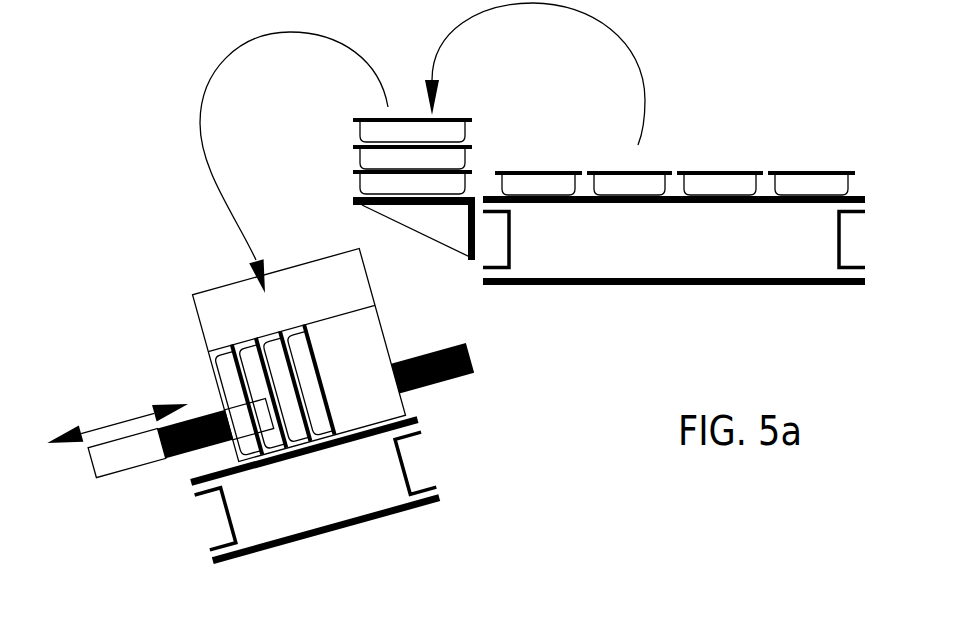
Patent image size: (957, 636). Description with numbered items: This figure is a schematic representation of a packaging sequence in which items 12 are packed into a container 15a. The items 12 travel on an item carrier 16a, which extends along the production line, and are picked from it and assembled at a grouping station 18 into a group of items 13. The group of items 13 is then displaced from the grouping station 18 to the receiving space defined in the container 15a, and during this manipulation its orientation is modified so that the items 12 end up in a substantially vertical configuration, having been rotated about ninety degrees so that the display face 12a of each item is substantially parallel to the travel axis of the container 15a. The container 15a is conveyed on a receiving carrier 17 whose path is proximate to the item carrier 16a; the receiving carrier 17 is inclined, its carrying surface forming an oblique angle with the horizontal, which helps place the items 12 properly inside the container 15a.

The item 12 is at (812, 183).
The display face 12a is at (307, 342).
The group of items 13 is at (326, 153).
The container 15a is at (393, 415).
The item carrier 16a is at (797, 260).
The receiving carrier 17 is at (375, 493).
The grouping station 18 is at (433, 220).